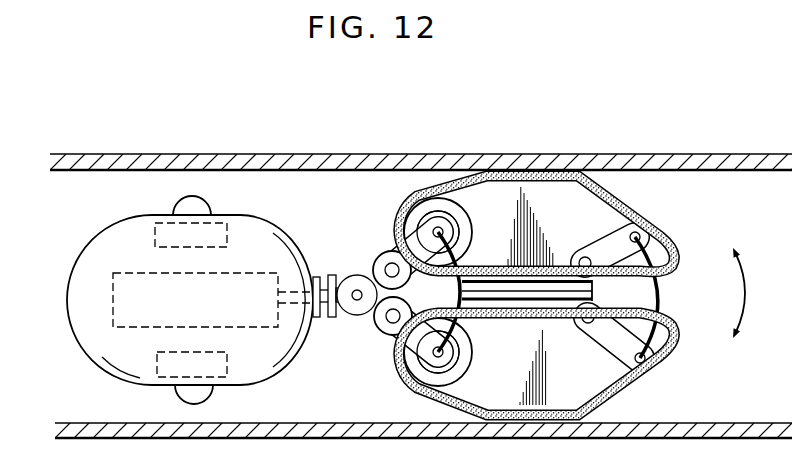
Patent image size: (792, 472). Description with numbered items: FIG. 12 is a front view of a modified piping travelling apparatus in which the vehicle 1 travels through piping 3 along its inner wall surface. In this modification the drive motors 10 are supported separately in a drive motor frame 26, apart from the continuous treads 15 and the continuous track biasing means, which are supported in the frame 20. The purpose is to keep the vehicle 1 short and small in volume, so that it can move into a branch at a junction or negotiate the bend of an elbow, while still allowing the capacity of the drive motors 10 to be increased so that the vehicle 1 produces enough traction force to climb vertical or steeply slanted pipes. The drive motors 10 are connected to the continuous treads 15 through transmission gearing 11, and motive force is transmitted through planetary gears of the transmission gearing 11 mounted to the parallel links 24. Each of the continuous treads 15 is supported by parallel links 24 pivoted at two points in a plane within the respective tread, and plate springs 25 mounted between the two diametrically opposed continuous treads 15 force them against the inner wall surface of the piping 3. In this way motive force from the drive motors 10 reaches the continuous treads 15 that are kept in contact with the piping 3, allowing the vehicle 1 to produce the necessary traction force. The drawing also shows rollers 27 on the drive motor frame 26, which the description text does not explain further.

The vehicle 1 is at (673, 285).
The piping 3 is at (368, 155).
The drive motors 10 is at (253, 283).
The transmission gearing 11 is at (394, 238).
The continuous treads 15 is at (400, 363).
The frame 20 is at (493, 223).
The parallel links 24 is at (605, 247).
The plate springs 25 is at (663, 310).
The drive motor frame 26 is at (123, 238).
The guide roller 27 is at (188, 207).